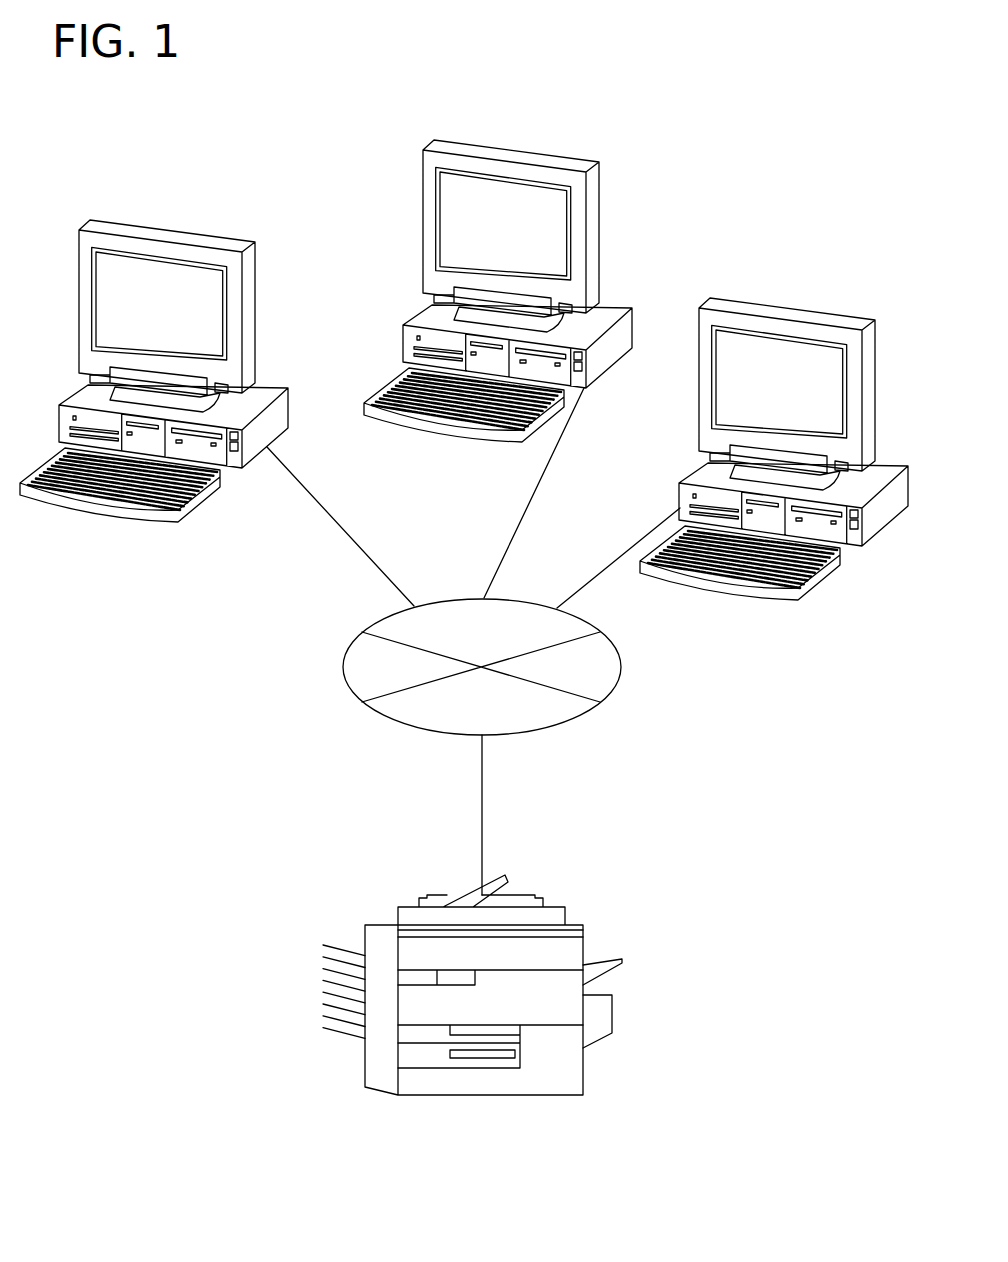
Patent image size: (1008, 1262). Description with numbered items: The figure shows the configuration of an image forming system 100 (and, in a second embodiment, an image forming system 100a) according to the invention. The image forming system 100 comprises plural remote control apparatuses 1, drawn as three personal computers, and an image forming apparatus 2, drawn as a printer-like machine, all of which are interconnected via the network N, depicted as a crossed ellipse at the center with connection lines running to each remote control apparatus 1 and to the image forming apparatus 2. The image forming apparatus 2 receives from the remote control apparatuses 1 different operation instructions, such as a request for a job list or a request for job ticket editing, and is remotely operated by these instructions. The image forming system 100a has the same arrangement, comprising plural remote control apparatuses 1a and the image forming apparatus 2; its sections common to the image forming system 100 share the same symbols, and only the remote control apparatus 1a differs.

The remote control apparatus 1 is at (464, 344).
The remote control apparatus 1a is at (464, 344).
The image forming system 100 is at (673, 154).
The image forming system 100a is at (464, 591).
The network N is at (622, 667).
The image forming apparatus 2 is at (583, 1068).